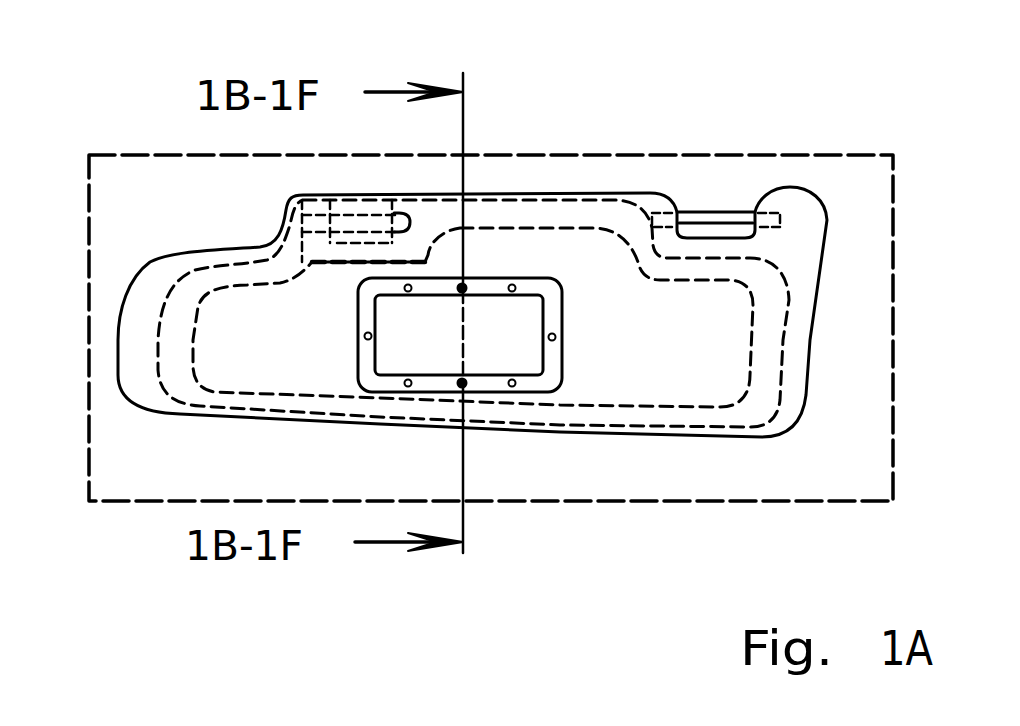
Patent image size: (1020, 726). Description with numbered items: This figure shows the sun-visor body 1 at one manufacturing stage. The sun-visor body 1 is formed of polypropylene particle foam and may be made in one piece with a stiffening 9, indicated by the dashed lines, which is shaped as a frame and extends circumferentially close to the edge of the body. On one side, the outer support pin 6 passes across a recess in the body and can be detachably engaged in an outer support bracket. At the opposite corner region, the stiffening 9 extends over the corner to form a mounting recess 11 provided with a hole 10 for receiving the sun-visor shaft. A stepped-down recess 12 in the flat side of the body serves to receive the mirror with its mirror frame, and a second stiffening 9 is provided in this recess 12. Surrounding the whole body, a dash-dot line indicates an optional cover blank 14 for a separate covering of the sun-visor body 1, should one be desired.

The sun-visor body 1 is at (803, 223).
The outer support pin 6 is at (722, 214).
The stiffening 9 is at (758, 382).
The hole 10 is at (403, 197).
The mounting recess 11 is at (433, 226).
The stepped-down recess 12 is at (525, 353).
The cover blank 14 is at (630, 153).